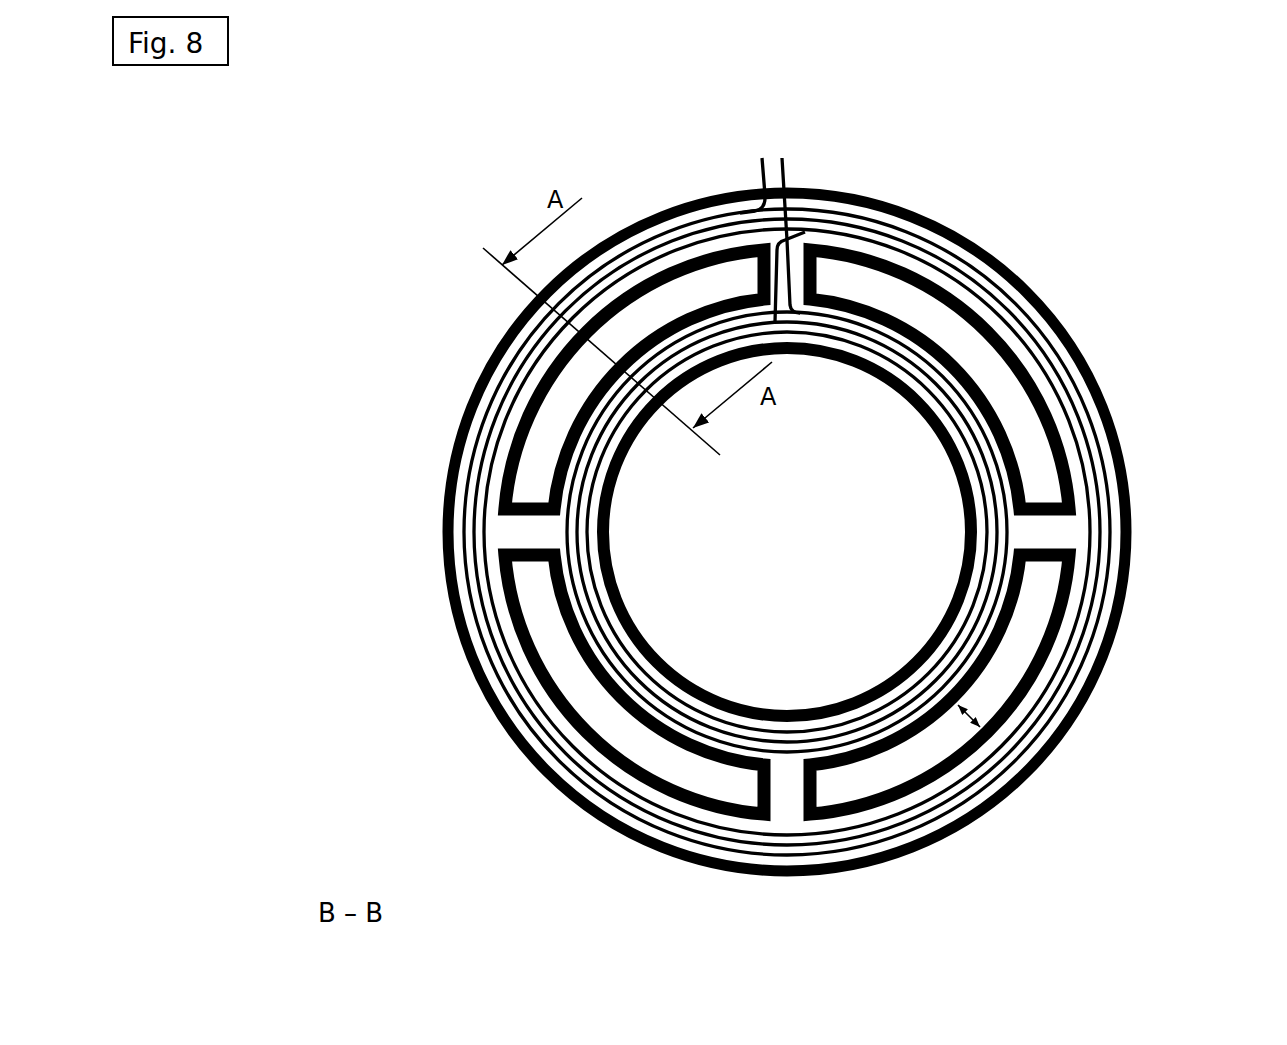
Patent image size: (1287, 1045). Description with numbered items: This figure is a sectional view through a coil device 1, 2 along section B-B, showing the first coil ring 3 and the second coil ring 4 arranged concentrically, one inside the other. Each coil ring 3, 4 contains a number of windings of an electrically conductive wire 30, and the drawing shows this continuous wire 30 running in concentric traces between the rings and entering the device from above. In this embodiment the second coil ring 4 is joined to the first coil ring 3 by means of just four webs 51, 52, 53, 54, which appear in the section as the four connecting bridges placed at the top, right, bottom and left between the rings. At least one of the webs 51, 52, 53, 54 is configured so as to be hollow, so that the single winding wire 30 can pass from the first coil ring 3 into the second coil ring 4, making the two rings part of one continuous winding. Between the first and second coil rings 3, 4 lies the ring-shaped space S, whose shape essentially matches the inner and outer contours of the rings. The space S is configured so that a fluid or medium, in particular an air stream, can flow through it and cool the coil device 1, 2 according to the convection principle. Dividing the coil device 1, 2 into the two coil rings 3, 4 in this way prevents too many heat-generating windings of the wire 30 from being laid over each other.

The first coil device 1 is at (806, 498).
The second coil device 2 is at (806, 498).
The first coil ring 3 is at (485, 705).
The second coil ring 4 is at (808, 566).
The electrically conductive wire 30 is at (1002, 482).
The web 51 is at (817, 277).
The web 52 is at (1050, 528).
The web 53 is at (787, 797).
The web 54 is at (527, 528).
The ring-shaped space S is at (970, 713).